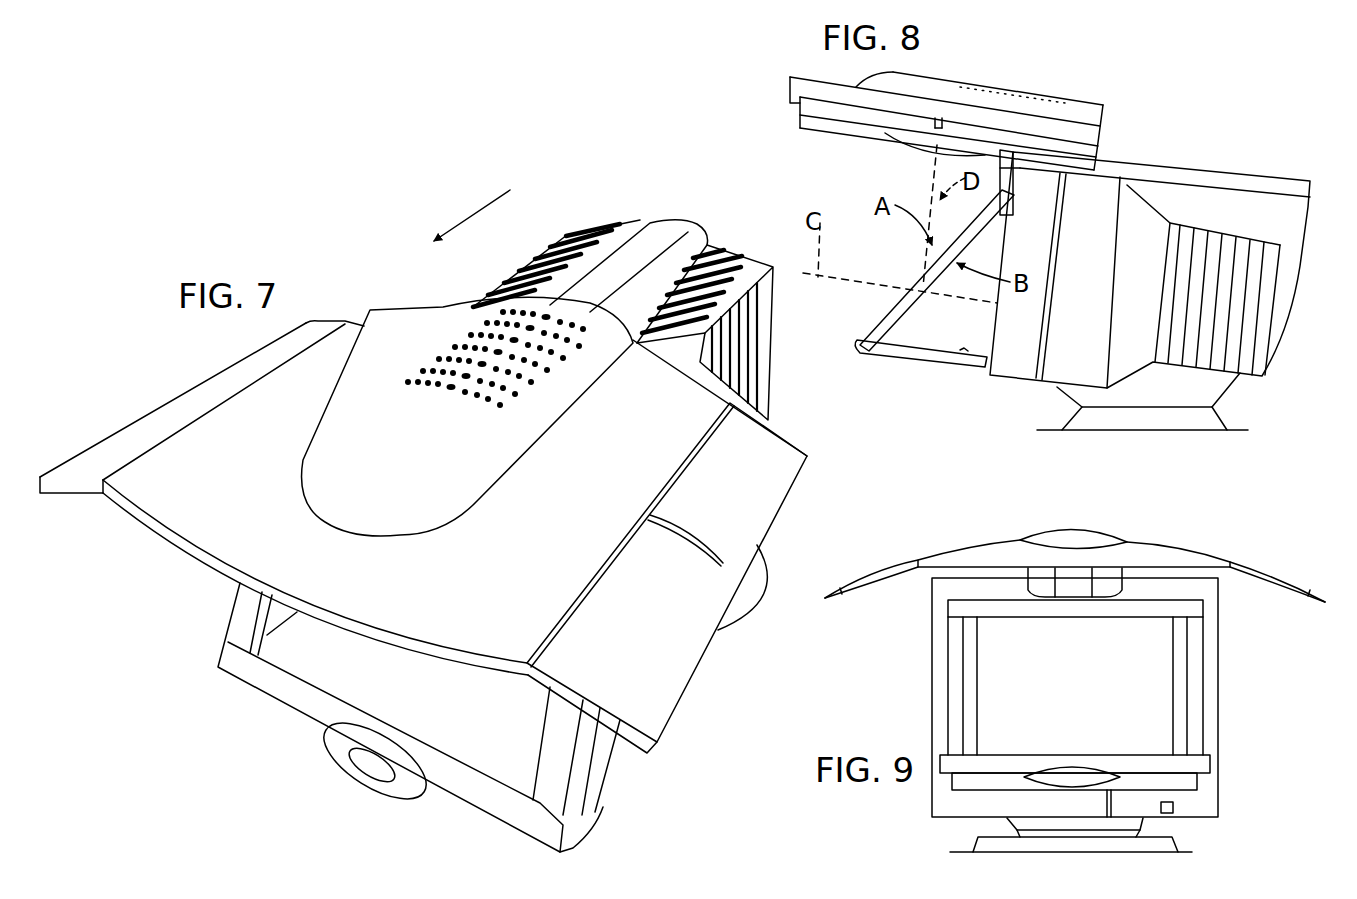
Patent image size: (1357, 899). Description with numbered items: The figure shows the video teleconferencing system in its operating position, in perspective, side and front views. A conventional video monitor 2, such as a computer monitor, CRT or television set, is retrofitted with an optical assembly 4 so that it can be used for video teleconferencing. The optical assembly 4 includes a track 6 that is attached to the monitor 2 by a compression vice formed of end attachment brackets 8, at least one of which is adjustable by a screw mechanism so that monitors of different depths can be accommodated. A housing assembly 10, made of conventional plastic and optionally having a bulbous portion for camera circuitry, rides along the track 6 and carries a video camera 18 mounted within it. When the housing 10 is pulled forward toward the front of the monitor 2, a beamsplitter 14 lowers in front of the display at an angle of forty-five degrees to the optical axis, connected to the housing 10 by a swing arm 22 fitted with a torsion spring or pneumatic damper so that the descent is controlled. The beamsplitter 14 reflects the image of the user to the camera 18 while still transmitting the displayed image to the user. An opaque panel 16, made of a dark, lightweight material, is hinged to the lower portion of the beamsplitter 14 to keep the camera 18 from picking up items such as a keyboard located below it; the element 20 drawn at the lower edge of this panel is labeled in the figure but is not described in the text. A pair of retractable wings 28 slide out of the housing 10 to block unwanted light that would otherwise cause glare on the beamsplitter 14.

In FIG. 7, the video monitor 2 is at (767, 348).
In FIG. 8, the video monitor 2 is at (1010, 375).
In FIG. 9, the video monitor 2 is at (931, 670).
In FIG. 8, the optical assembly 4 is at (1122, 124).
In FIG. 9, the optical assembly 4 is at (940, 543).
In FIG. 7, the track 6 is at (652, 241).
In FIG. 8, the track 6 is at (1222, 166).
In FIG. 8, the attachment brackets 8 is at (1003, 190).
In FIG. 9, the attachment brackets 8 is at (1127, 571).
In FIG. 7, the housing assembly 10 is at (455, 486).
In FIG. 8, the housing assembly 10 is at (827, 107).
In FIG. 9, the housing assembly 10 is at (1079, 548).
In FIG. 7, the beamsplitter 14 is at (330, 675).
In FIG. 8, the beamsplitter 14 is at (895, 332).
In FIG. 7, the opaque panel 16 is at (624, 770).
In FIG. 8, the opaque panel 16 is at (955, 372).
In FIG. 8, the video camera 18 is at (900, 146).
In FIG. 8, the foot 20 is at (866, 357).
In FIG. 8, the swing arm 22 is at (1003, 158).
In FIG. 7, the retractable wings 28 is at (103, 455).